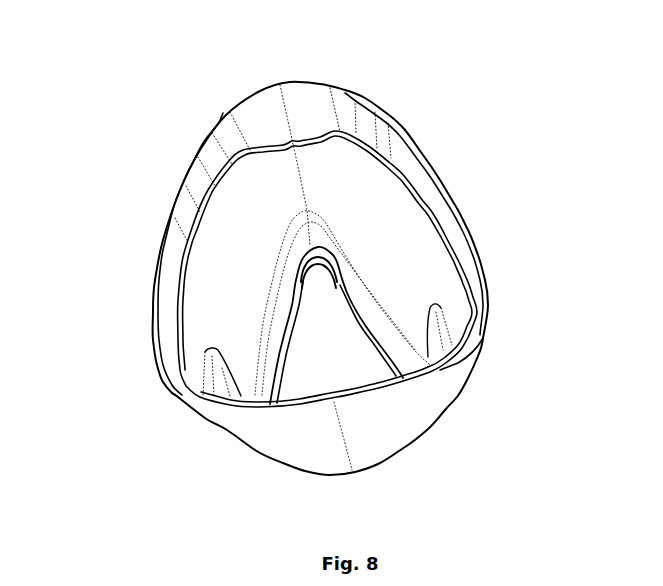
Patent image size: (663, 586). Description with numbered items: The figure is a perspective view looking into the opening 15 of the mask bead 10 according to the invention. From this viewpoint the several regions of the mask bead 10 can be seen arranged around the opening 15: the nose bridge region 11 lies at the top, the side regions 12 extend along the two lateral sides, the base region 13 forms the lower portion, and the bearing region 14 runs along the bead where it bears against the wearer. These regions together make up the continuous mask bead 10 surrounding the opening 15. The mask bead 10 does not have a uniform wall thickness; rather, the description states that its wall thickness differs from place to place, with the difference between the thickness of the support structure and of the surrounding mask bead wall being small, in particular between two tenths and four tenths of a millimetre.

The mask bead 10 is at (150, 241).
The nose bridge region 11 is at (266, 78).
The side regions 12 is at (144, 267).
The base region 13 is at (386, 442).
The bearing region 14 is at (176, 250).
The opening 15 is at (338, 329).